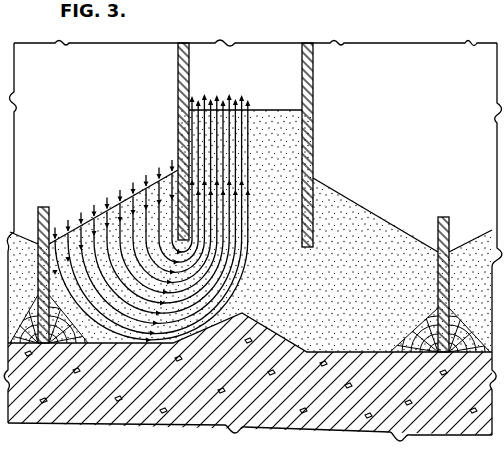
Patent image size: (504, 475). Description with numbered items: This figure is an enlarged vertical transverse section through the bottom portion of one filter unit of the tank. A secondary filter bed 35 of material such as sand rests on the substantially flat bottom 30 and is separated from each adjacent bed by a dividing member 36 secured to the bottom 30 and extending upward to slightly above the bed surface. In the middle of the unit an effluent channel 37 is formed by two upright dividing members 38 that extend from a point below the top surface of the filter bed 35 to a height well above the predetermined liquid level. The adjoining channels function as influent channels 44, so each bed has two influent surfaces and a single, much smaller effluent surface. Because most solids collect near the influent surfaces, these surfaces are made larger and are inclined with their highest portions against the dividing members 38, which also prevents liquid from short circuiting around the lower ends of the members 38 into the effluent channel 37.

The bottom 30 is at (200, 420).
The secondary filter bed 35 is at (355, 225).
The dividing member 36 is at (46, 207).
The effluent channel 37 is at (265, 60).
The dividing member 38 is at (178, 73).
The influent channel 44 is at (137, 55).